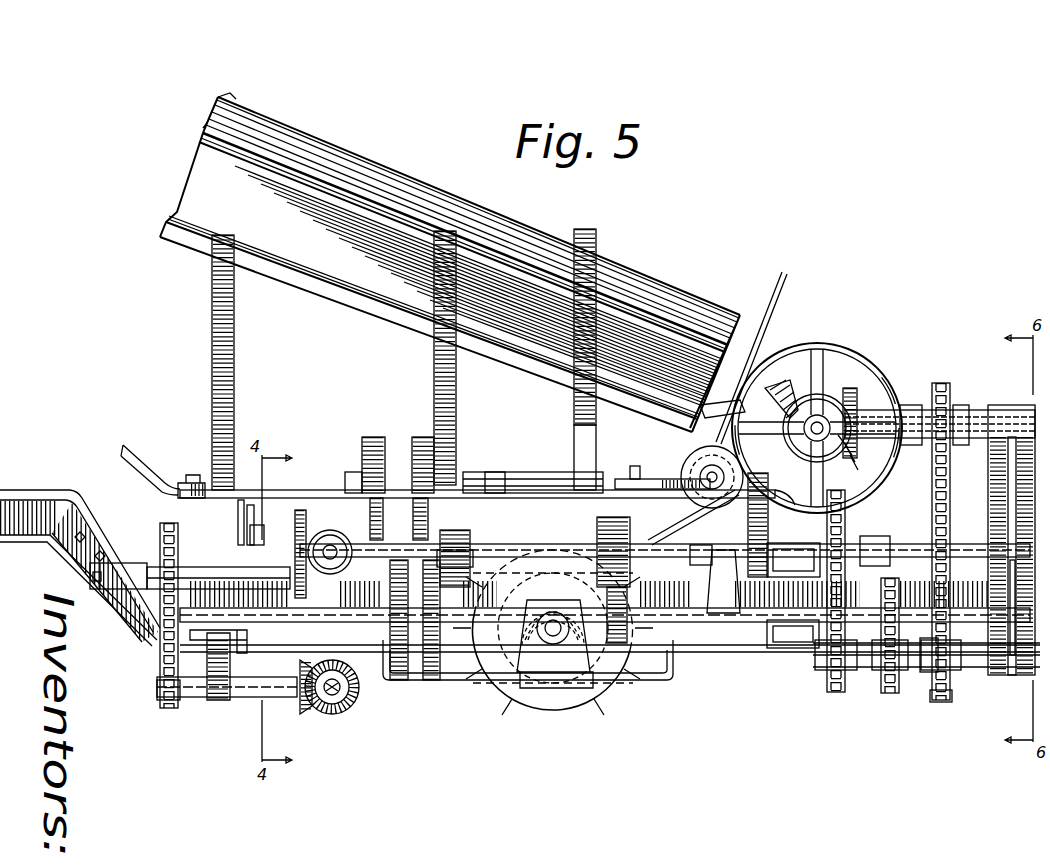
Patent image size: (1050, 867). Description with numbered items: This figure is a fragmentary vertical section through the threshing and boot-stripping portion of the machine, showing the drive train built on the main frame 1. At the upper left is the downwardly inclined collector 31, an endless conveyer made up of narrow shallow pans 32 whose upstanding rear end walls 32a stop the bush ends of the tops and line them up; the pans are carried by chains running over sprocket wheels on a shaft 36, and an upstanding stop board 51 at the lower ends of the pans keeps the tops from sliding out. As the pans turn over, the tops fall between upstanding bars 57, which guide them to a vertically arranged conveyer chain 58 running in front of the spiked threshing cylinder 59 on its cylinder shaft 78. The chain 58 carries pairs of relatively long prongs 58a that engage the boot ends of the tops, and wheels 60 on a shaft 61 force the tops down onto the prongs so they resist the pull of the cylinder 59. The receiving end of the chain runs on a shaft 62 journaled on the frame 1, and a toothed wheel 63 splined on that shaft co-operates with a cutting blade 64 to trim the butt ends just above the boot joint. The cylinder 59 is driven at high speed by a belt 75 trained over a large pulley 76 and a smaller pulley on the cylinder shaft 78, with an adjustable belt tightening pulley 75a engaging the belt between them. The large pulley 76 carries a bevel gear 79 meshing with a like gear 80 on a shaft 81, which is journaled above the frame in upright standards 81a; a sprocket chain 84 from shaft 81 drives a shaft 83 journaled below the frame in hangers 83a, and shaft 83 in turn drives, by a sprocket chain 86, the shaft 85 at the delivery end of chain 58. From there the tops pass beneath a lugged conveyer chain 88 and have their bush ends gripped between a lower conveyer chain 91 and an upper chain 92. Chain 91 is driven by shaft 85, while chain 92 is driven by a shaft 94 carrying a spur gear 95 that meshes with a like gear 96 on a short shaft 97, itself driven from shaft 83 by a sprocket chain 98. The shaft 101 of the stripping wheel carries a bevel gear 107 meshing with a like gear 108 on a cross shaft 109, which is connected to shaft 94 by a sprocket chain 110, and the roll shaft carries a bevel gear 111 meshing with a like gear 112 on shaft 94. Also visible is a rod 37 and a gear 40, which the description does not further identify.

The main frame 1 is at (38, 490).
The collector 31 is at (500, 215).
The pans 32 is at (196, 150).
The rear end walls 32a is at (478, 286).
The shaft 36 is at (722, 403).
The rod 37 is at (1003, 607).
The bevel gear 40 is at (775, 440).
The stop board 51 is at (786, 280).
The upstanding bars 57 is at (236, 392).
The conveyer chain 58 is at (392, 650).
The prongs 58a is at (400, 680).
The threshing cylinder 59 is at (585, 712).
The wheels 60 is at (420, 436).
The shaft 61 is at (535, 478).
The shaft 62 is at (157, 560).
The toothed wheel 63 is at (246, 536).
The cutting blade 64 is at (245, 505).
The belt 75 is at (858, 360).
The belt tightening pulley 75a is at (690, 470).
The large pulley 76 is at (883, 381).
The cylinder shaft 78 is at (545, 643).
The bevel gear 79 is at (836, 460).
The bevel gear 80 is at (852, 395).
The shaft 81 is at (975, 410).
The upright standards 81a is at (990, 478).
The shaft 83 is at (962, 670).
The hangers 83a is at (1000, 672).
The sprocket chain 84 is at (944, 385).
The shaft 85 is at (780, 630).
The sprocket chain 86 is at (890, 694).
The conveyer chain 88 is at (458, 530).
The conveyer chain 91 is at (618, 648).
The upper chain 92 is at (612, 525).
The shaft 94 is at (236, 552).
The spur gear 95 is at (793, 560).
The spur gear 96 is at (768, 484).
The short shaft 97 is at (735, 517).
The sprocket chain 98 is at (836, 694).
The shaft 101 is at (342, 710).
The bevel gear 107 is at (336, 716).
The bevel gear 108 is at (308, 714).
The cross shaft 109 is at (258, 700).
The sprocket chain 110 is at (168, 710).
The bevel gear 111 is at (336, 536).
The bevel gear 112 is at (306, 520).